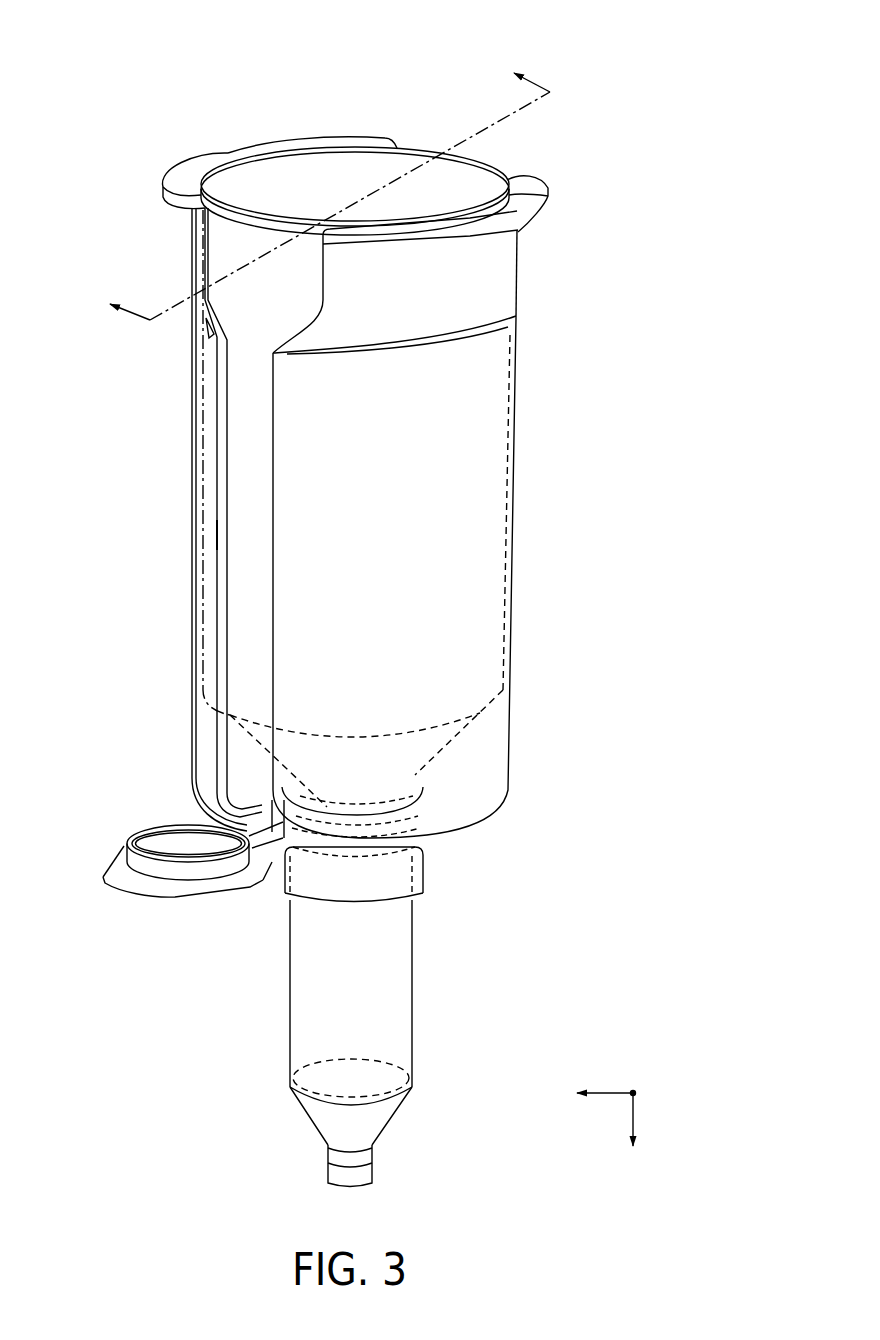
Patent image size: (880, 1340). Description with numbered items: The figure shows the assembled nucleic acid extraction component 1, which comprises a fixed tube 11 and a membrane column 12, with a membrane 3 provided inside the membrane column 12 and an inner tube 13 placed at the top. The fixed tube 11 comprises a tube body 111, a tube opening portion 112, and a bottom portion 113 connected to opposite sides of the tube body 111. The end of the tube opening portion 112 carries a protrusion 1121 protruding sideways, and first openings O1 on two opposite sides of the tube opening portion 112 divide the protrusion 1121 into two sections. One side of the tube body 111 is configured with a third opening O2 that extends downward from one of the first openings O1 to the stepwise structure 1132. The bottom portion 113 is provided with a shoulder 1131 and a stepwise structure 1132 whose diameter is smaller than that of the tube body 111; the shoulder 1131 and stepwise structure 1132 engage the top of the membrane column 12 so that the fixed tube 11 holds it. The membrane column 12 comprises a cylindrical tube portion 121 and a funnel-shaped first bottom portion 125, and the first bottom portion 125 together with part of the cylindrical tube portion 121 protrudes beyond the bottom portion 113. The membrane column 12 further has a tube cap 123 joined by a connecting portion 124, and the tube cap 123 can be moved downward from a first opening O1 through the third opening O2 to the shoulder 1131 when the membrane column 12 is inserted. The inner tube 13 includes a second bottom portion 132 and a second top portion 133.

The nucleic acid extraction component 1 is at (198, 60).
The fixed tube 11 is at (430, 557).
The tube body 111 is at (497, 750).
The tube opening portion 112 is at (496, 300).
The protrusion 1121 is at (193, 173).
The bottom portion 113 is at (513, 886).
The shoulder 1131 is at (458, 833).
The stepwise structure 1132 is at (430, 870).
The membrane column 12 is at (383, 993).
The cylindrical tube portion 121 is at (400, 1008).
The tube cap 123 is at (168, 838).
The connecting portion 124 is at (277, 866).
The first bottom portion 125 is at (377, 1122).
The inner tube 13 is at (410, 132).
The second bottom portion 132 is at (415, 777).
The second top portion 133 is at (232, 220).
The membrane 3 is at (410, 1073).
The first openings O1 is at (210, 335).
The third opening O2 is at (224, 537).